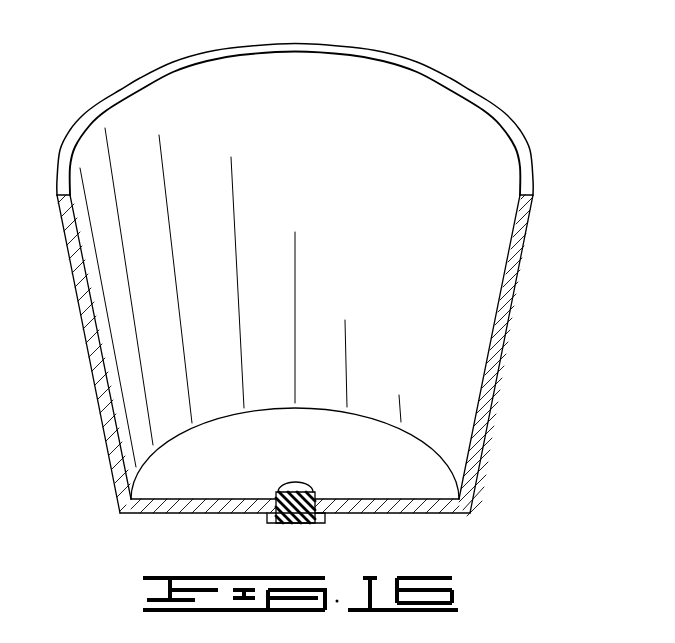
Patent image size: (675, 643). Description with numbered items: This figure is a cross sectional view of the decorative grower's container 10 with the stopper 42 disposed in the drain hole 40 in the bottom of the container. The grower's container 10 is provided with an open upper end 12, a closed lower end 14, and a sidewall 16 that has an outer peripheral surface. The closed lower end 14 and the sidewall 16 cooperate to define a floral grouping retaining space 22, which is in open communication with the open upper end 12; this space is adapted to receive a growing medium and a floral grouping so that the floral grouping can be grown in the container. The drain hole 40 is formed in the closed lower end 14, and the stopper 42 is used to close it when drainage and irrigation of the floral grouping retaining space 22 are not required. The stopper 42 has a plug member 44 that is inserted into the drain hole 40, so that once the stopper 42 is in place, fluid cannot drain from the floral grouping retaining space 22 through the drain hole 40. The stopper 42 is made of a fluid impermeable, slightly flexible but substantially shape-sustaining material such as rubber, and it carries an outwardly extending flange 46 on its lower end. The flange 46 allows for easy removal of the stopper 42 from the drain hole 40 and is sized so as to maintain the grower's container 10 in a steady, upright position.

The grower's container 10 is at (318, 307).
The open upper end 12 is at (107, 102).
The closed lower end 14 is at (153, 514).
The sidewall 16 is at (498, 363).
The floral grouping retaining space 22 is at (443, 247).
The drain hole 40 is at (301, 511).
The stopper 42 is at (278, 522).
The plug member 44 is at (288, 485).
The outwardly extending flange 46 is at (325, 521).